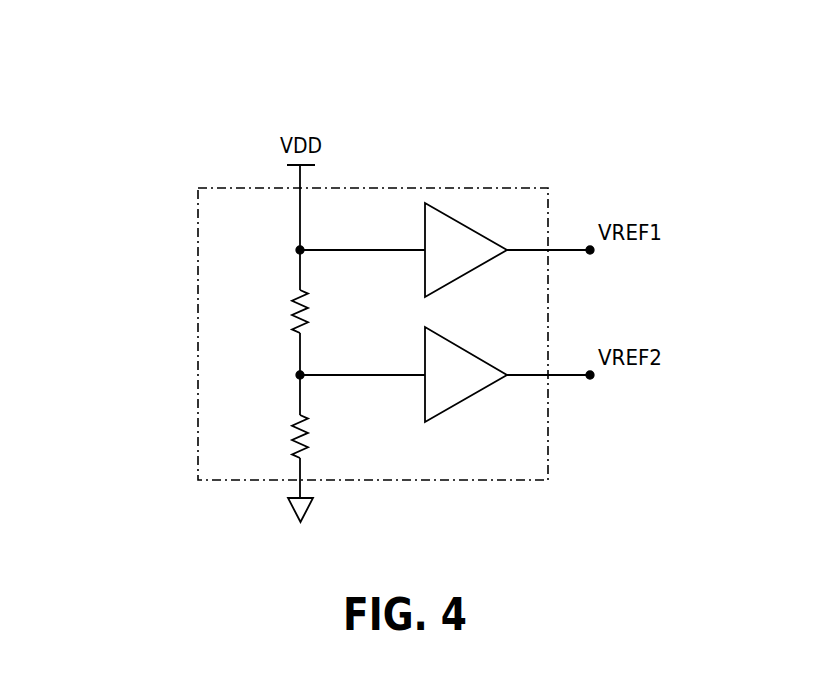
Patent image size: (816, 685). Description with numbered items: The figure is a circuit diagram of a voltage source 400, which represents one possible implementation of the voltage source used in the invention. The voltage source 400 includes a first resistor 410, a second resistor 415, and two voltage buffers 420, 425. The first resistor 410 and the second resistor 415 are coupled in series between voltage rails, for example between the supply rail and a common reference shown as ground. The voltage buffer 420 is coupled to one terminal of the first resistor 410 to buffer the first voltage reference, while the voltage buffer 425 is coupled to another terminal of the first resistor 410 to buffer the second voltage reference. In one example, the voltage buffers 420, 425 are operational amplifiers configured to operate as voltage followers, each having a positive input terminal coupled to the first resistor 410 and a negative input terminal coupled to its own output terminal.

The voltage source 400 is at (198, 188).
The first resistor 410 is at (300, 291).
The second resistor 415 is at (300, 415).
The voltage buffer 420 is at (450, 215).
The voltage buffer 425 is at (465, 398).